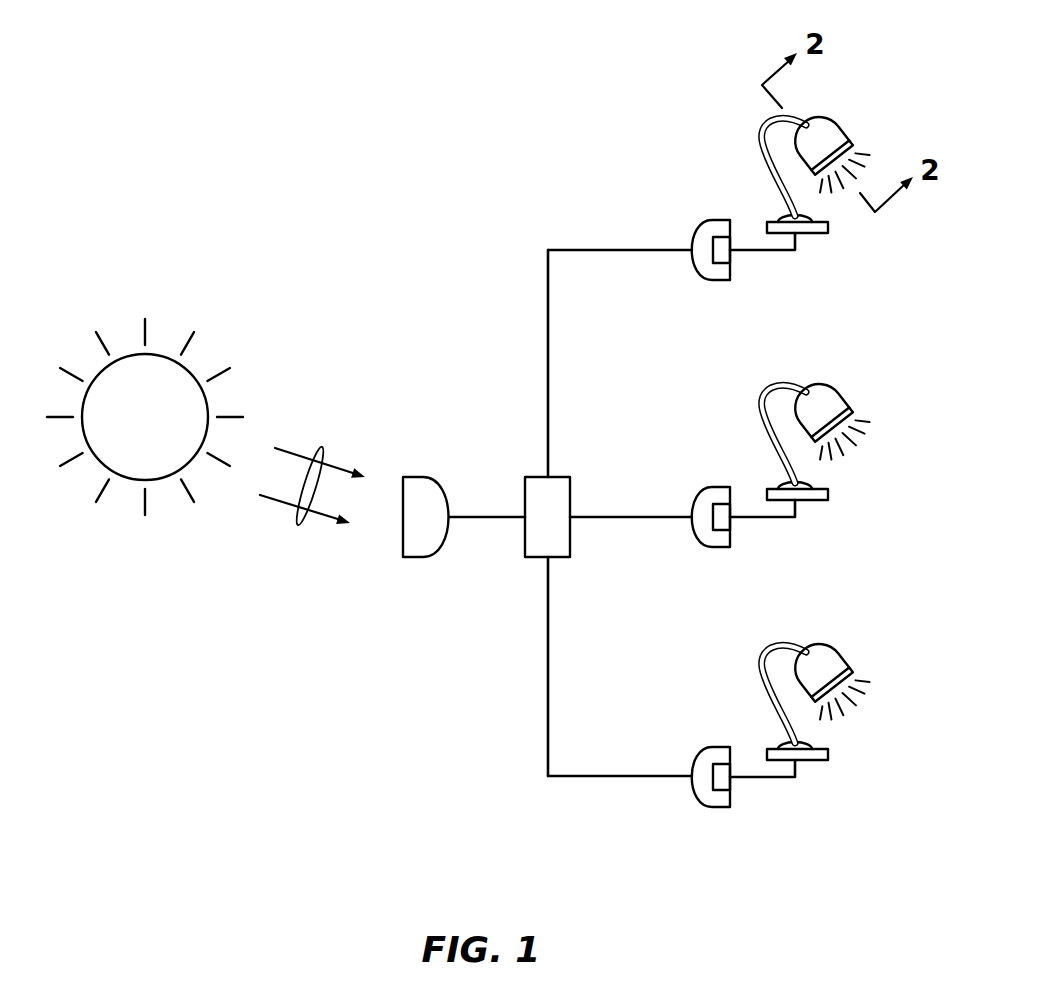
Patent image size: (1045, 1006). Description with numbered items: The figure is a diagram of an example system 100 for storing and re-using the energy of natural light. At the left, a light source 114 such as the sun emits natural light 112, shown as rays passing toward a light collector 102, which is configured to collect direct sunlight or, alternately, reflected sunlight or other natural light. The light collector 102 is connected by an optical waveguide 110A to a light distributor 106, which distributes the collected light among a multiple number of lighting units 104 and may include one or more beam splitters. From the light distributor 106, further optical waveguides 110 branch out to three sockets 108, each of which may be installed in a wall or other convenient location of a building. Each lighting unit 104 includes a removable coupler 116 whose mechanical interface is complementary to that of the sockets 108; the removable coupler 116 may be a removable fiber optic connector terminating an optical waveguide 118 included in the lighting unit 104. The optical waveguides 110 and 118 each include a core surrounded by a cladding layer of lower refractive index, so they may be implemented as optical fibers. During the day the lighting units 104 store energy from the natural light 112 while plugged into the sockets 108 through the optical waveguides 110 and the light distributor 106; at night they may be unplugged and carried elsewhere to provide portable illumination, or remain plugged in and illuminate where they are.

The system 100 is at (415, 138).
The light collector 102 is at (450, 488).
The lighting unit 104 is at (852, 118).
The light distributor 106 is at (565, 477).
The socket 108 is at (688, 266).
The optical waveguide 110 is at (632, 252).
The optical waveguide 110A is at (472, 520).
The natural light 112 is at (322, 447).
The light source 114 is at (145, 417).
The removable coupler 116 is at (735, 242).
The optical waveguide 118 is at (755, 251).